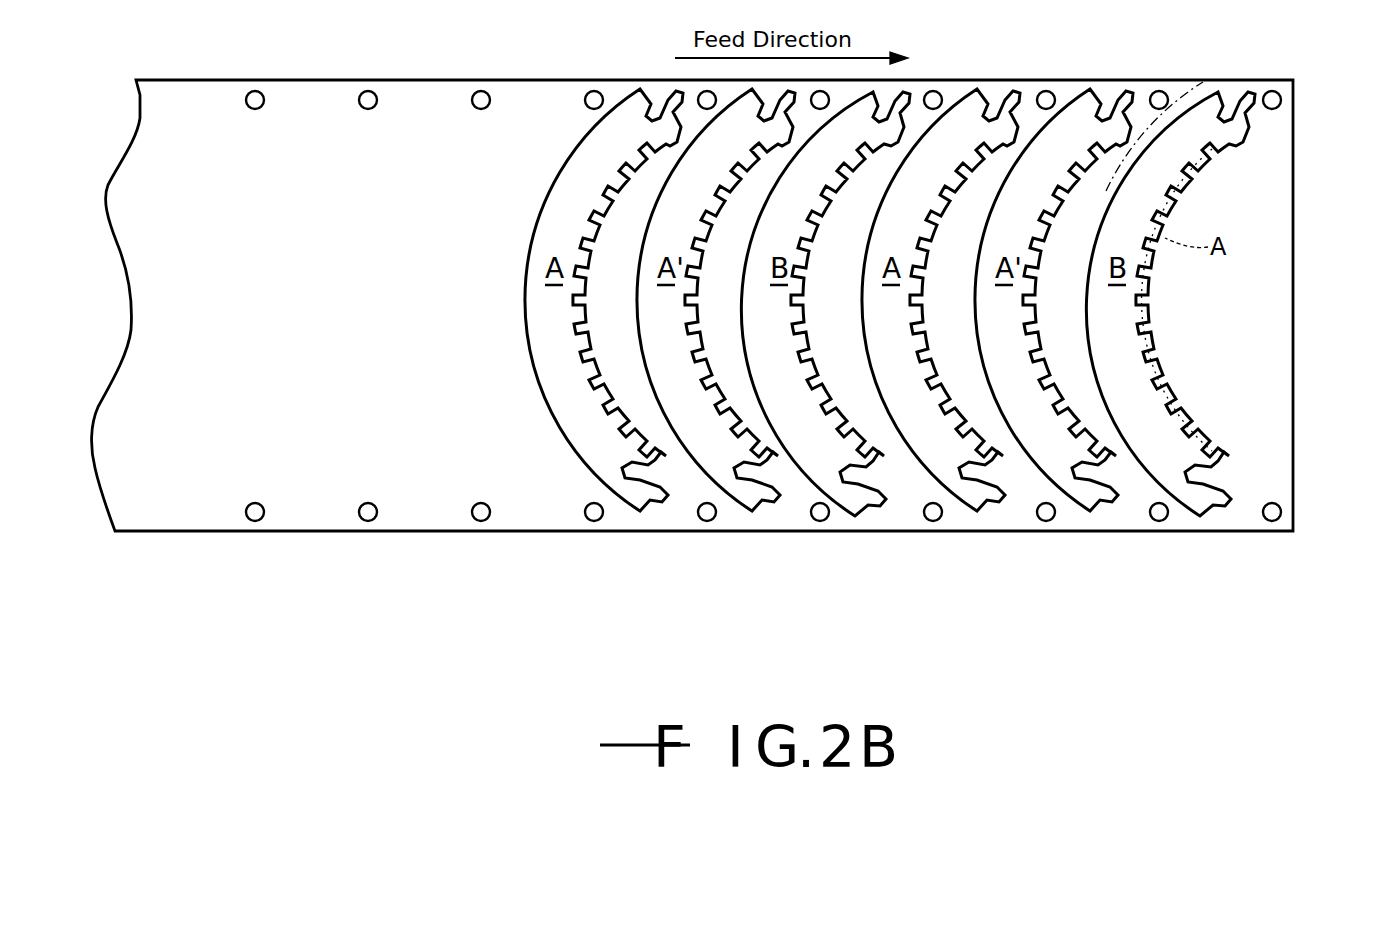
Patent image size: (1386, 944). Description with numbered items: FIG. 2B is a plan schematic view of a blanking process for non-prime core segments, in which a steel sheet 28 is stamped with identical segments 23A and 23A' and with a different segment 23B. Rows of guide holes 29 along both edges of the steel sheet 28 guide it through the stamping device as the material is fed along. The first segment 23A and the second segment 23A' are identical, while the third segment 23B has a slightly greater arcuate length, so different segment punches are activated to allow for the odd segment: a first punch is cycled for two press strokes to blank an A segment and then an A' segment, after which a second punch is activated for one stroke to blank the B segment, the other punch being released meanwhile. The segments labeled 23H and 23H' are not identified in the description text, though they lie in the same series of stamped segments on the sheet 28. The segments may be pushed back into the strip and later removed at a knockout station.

The first segment 23A is at (1118, 300).
The second segment 23A' is at (1178, 300).
The third segment 23B is at (757, 312).
The half-blanked segment core 23H is at (526, 300).
The half-blanked segment core 23H' is at (580, 300).
The steel sheet 28 is at (313, 515).
The guide holes 29 is at (487, 517).